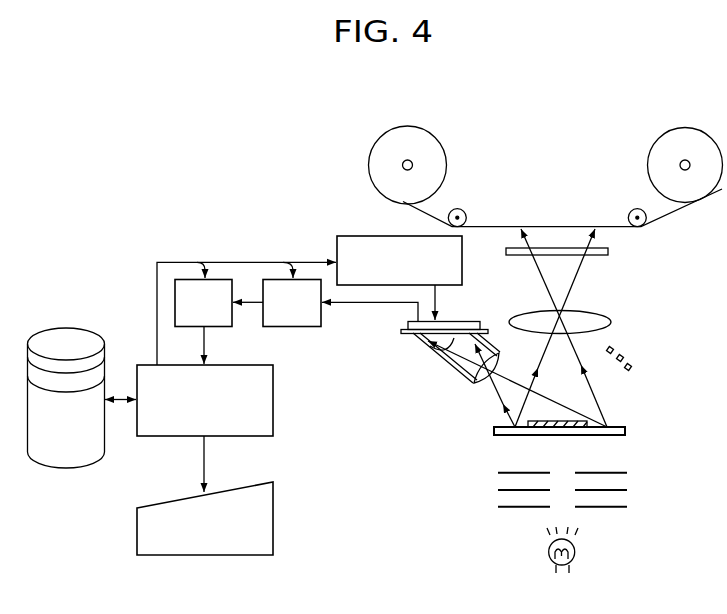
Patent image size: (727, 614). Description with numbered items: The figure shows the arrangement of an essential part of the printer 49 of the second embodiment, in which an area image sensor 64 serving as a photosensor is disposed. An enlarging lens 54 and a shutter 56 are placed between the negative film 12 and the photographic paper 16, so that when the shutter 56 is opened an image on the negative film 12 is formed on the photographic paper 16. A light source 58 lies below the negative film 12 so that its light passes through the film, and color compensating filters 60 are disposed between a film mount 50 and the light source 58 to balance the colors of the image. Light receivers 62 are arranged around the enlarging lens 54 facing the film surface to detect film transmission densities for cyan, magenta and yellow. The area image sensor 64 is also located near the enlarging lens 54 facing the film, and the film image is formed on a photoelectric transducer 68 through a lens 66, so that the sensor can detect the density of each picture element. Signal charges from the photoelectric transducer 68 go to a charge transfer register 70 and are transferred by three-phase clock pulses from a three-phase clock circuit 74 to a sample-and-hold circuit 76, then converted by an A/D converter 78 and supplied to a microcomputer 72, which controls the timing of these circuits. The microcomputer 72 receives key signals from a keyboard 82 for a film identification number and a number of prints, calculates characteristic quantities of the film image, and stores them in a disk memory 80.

The negative film 12 is at (573, 422).
The photographic paper 16 is at (515, 225).
The printer 49 is at (655, 312).
The film mount 50 is at (627, 430).
The enlarging lens 54 is at (597, 312).
The shutter 56 is at (603, 262).
The light source 58 is at (575, 553).
The color compensating filters 60 is at (634, 468).
The light receivers 62 is at (637, 358).
The area image sensor 64 is at (462, 385).
The lens 66 is at (493, 368).
The photoelectric transducer 68 is at (440, 351).
The charge transfer register 70 is at (463, 319).
The microcomputer 72 is at (274, 398).
The three-phase clock circuit 74 is at (352, 235).
The sample-and-hold circuit 76 is at (303, 328).
The A/D converter 78 is at (227, 328).
The disk memory 80 is at (80, 468).
The keyboard 82 is at (274, 527).